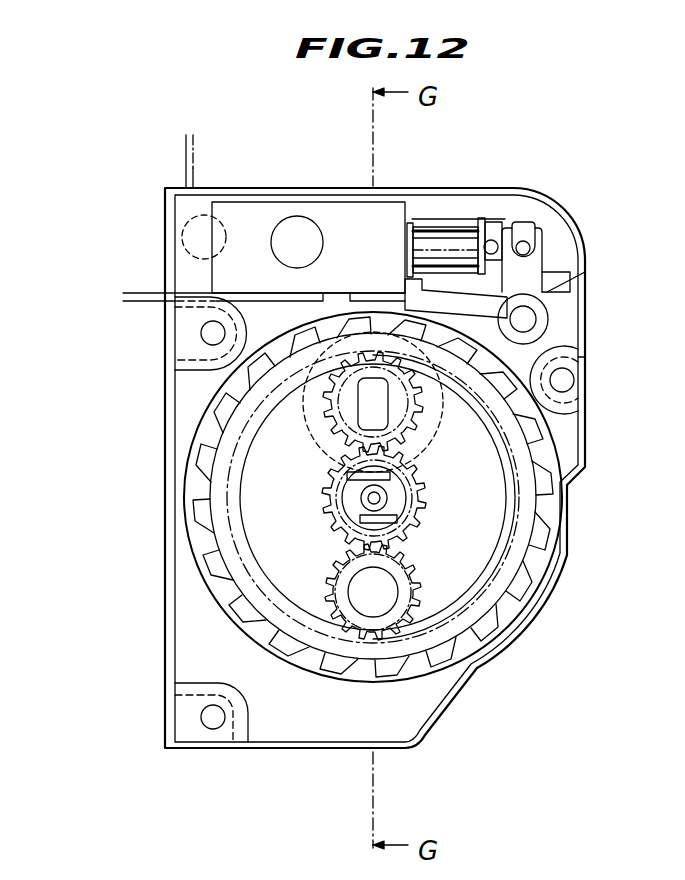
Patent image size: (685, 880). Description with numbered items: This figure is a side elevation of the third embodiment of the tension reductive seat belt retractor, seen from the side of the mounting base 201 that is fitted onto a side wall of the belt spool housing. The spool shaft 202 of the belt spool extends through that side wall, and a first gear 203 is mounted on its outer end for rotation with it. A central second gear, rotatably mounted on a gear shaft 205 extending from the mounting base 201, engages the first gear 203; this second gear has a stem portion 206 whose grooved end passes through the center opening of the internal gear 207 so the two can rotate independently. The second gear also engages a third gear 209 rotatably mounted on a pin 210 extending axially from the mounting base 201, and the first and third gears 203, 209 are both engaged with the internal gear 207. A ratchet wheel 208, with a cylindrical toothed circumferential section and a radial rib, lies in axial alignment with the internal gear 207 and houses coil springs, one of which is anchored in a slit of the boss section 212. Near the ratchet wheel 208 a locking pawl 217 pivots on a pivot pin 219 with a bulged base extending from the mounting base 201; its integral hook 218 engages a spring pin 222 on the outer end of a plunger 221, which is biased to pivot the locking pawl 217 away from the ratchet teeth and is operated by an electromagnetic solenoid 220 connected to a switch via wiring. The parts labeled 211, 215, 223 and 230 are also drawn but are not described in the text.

The mounting base 201 is at (440, 715).
The spool shaft 202 is at (380, 395).
The first gear 203 is at (395, 468).
The gear shaft 205 is at (347, 475).
The stem portion 206 is at (398, 503).
The internal gear 207 is at (200, 468).
The ratchet wheel 208 is at (248, 614).
The third gear 209 is at (352, 660).
The pin 210 is at (380, 625).
The disc 211 is at (538, 592).
The boss section 212 is at (332, 662).
The outer ring 215 is at (212, 598).
The locking pawl 217 is at (420, 292).
The hook 218 is at (532, 268).
The pivot pin 219 is at (529, 317).
The electromagnetic solenoid 220 is at (262, 208).
The plunger 221 is at (452, 226).
The spring pin 222 is at (527, 224).
The flange 223 is at (482, 222).
The lead wire 230 is at (186, 168).